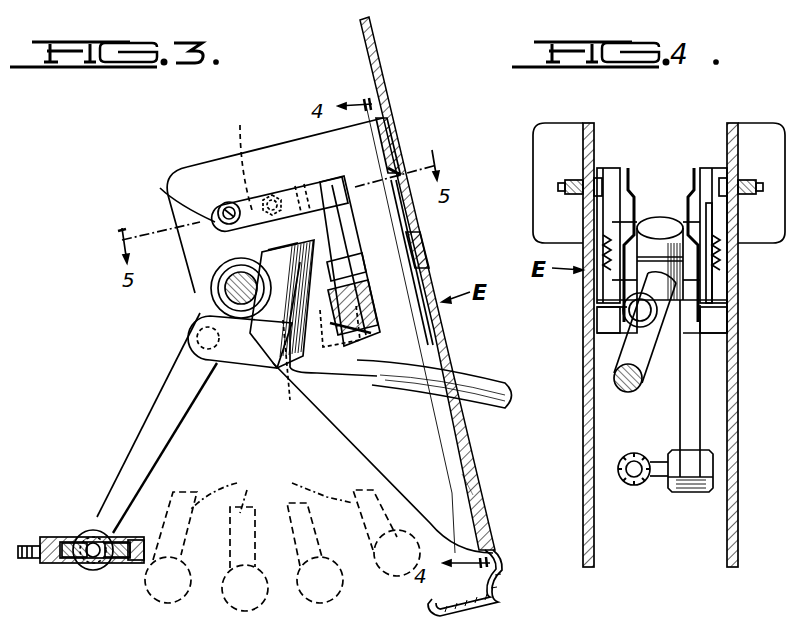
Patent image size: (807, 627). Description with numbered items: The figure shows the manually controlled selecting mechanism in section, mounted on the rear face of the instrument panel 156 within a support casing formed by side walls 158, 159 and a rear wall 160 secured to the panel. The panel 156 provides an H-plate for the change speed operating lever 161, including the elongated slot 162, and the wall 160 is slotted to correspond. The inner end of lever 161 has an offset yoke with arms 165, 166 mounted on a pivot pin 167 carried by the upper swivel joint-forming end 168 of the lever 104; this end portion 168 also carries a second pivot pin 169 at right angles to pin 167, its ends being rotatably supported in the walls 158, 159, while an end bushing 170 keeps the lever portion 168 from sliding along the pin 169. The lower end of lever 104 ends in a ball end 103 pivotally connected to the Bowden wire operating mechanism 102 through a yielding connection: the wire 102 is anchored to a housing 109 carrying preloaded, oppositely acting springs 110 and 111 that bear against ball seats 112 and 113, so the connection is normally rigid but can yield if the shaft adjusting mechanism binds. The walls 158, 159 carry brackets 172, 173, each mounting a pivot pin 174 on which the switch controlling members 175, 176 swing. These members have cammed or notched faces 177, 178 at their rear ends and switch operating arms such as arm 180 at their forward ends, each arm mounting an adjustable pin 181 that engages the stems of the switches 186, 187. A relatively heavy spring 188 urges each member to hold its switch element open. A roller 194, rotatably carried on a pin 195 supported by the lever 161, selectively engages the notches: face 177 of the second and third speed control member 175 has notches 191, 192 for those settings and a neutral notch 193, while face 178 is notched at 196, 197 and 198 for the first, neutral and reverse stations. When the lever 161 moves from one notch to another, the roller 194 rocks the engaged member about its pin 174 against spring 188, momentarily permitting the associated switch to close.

In FIG. 3, the Bowden wire operating mechanism 102 is at (24, 546).
In FIG. 3, the ball end 103 is at (97, 570).
In FIG. 3, the lever 104 is at (172, 390).
In FIG. 4, the lever 104 is at (688, 400).
In FIG. 3, the housing 109 is at (60, 565).
In FIG. 3, the spring 110 is at (116, 543).
In FIG. 3, the spring 111 is at (74, 543).
In FIG. 3, the ball seat 112 is at (118, 540).
In FIG. 3, the ball seat 113 is at (86, 562).
In FIG. 3, the instrument panel 156 is at (376, 62).
In FIG. 4, the side wall 158 is at (737, 380).
In FIG. 3, the side wall 159 is at (310, 137).
In FIG. 4, the side wall 159 is at (590, 321).
In FIG. 3, the rear wall 160 is at (462, 474).
In FIG. 3, the change speed operating lever 161 is at (498, 378).
In FIG. 4, the change speed operating lever 161 is at (625, 395).
In FIG. 3, the elongated slot 162 is at (420, 210).
In FIG. 3, the yoke arm 165 is at (270, 372).
In FIG. 3, the yoke arm 166 is at (352, 236).
In FIG. 3, the pivot pin 167 is at (381, 429).
In FIG. 3, the swivel joint-forming end 168 is at (303, 325).
In FIG. 4, the swivel joint-forming end 168 is at (675, 219).
In FIG. 3, the second pivot pin 169 is at (239, 274).
In FIG. 3, the end bushing 170 is at (212, 292).
In FIG. 4, the bracket 172 is at (721, 288).
In FIG. 3, the bracket 173 is at (283, 190).
In FIG. 4, the bracket 173 is at (597, 220).
In FIG. 3, the pivot pin 174 is at (323, 187).
In FIG. 3, the switch controlling member 175 is at (390, 146).
In FIG. 4, the switch controlling member 175 is at (705, 170).
In FIG. 4, the switch controlling member 176 is at (612, 168).
In FIG. 4, the cammed or notched face 177 is at (690, 207).
In FIG. 4, the cammed or notched face 178 is at (629, 172).
In FIG. 3, the switch operating arm 180 is at (250, 215).
In FIG. 3, the adjustable pin 181 is at (170, 195).
In FIG. 4, the switch 186 is at (748, 140).
In FIG. 3, the switch 187 is at (243, 140).
In FIG. 4, the switch 187 is at (553, 134).
In FIG. 4, the spring 188 is at (722, 255).
In FIG. 4, the notch 191 is at (722, 272).
In FIG. 4, the notch 192 is at (728, 205).
In FIG. 4, the neutral notch 193 is at (718, 226).
In FIG. 3, the roller 194 is at (358, 300).
In FIG. 4, the roller 194 is at (725, 305).
In FIG. 3, the pin 195 is at (366, 275).
In FIG. 3, the notch 196 is at (196, 338).
In FIG. 4, the notch 196 is at (623, 326).
In FIG. 3, the notch 197 is at (224, 379).
In FIG. 4, the notch 197 is at (620, 265).
In FIG. 4, the notch 198 is at (604, 182).